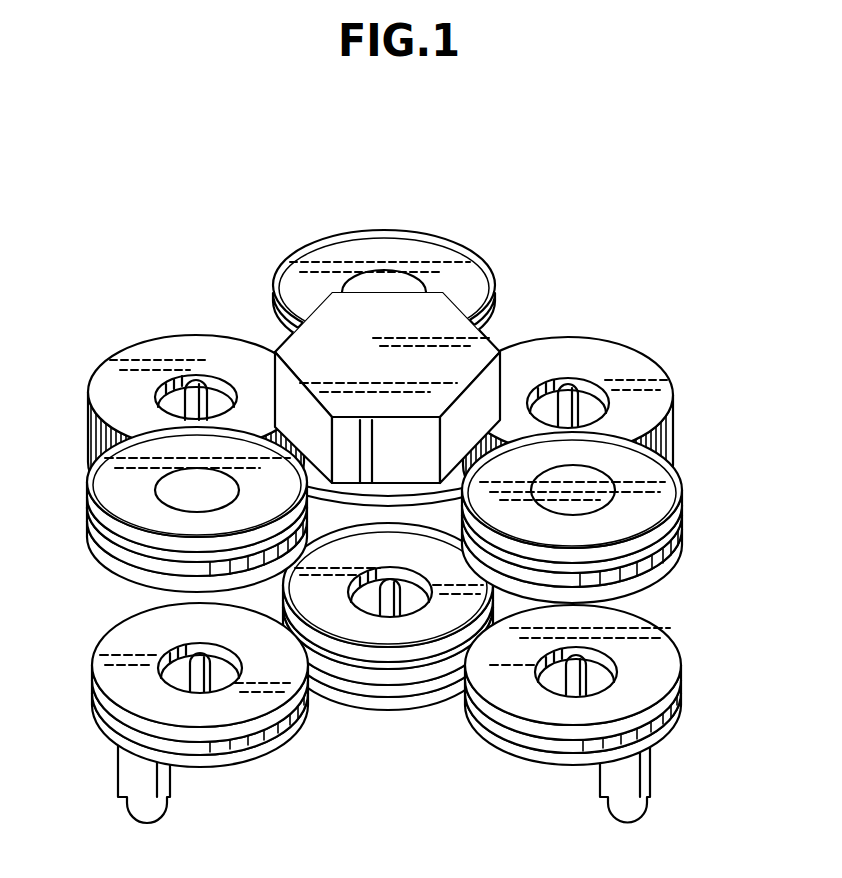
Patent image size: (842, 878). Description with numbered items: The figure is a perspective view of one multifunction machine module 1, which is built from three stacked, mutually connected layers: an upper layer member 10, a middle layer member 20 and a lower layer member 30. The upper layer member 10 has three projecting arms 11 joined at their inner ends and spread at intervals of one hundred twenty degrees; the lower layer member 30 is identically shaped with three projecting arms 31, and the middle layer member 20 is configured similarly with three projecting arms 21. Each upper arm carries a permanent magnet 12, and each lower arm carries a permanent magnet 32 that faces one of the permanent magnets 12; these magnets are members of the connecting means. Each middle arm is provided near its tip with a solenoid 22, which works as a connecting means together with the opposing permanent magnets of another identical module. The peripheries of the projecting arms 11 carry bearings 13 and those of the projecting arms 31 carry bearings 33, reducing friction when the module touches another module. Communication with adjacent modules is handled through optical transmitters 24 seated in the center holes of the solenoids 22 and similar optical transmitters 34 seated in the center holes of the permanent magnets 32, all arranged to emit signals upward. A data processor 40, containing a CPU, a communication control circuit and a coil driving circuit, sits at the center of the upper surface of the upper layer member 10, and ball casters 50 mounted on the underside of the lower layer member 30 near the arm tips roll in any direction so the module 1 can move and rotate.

The multifunction machine module 1 is at (538, 265).
The upper layer member 10 is at (700, 491).
The projecting arms 11 is at (383, 240).
The permanent magnet 12 is at (120, 565).
The bearings 13 is at (92, 500).
The middle layer member 20 is at (662, 352).
The projecting arms 21 is at (190, 355).
The solenoid 22 is at (362, 690).
The optical transmitters 24 is at (567, 382).
The lower layer member 30 is at (695, 710).
The projecting arms 31 is at (250, 743).
The permanent magnet 32 is at (120, 640).
The bearings 33 is at (222, 770).
The optical transmitters 34 is at (195, 662).
The data processor 40 is at (265, 221).
The ball casters 50 is at (118, 768).